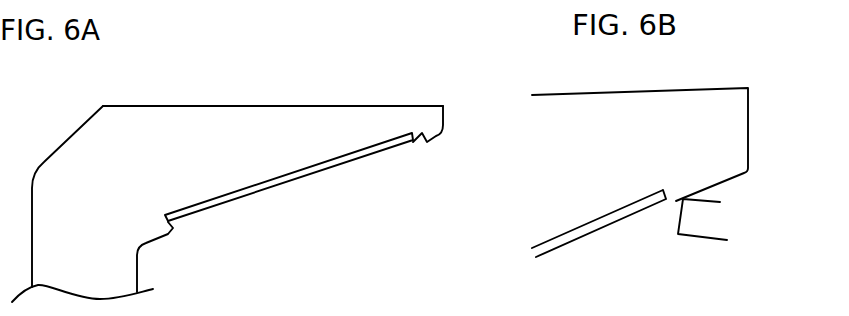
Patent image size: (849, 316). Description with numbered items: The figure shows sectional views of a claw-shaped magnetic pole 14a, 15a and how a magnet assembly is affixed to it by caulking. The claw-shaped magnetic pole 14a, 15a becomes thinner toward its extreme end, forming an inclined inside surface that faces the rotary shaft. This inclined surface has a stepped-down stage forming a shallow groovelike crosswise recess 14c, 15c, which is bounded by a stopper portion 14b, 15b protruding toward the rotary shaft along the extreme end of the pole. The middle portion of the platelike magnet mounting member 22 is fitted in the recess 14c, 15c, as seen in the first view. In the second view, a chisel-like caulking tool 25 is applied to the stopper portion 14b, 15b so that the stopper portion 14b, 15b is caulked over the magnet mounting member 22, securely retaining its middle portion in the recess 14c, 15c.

In FIG. 6A, the claw-shaped magnetic pole 14a is at (273, 89).
In FIG. 6A, the claw-shaped magnetic pole 15a is at (217, 118).
In FIG. 6A, the stopper portion 14b is at (426, 159).
In FIG. 6B, the stopper portion 14b is at (724, 230).
In FIG. 6A, the stopper portion 15b is at (425, 134).
In FIG. 6B, the stopper portion 15b is at (674, 182).
In FIG. 6A, the recess 14c is at (212, 236).
In FIG. 6A, the recess 15c is at (215, 184).
In FIG. 6A, the magnet mounting member 22 is at (278, 187).
In FIG. 6B, the magnet mounting member 22 is at (590, 230).
In FIG. 6B, the caulking tool 25 is at (707, 215).